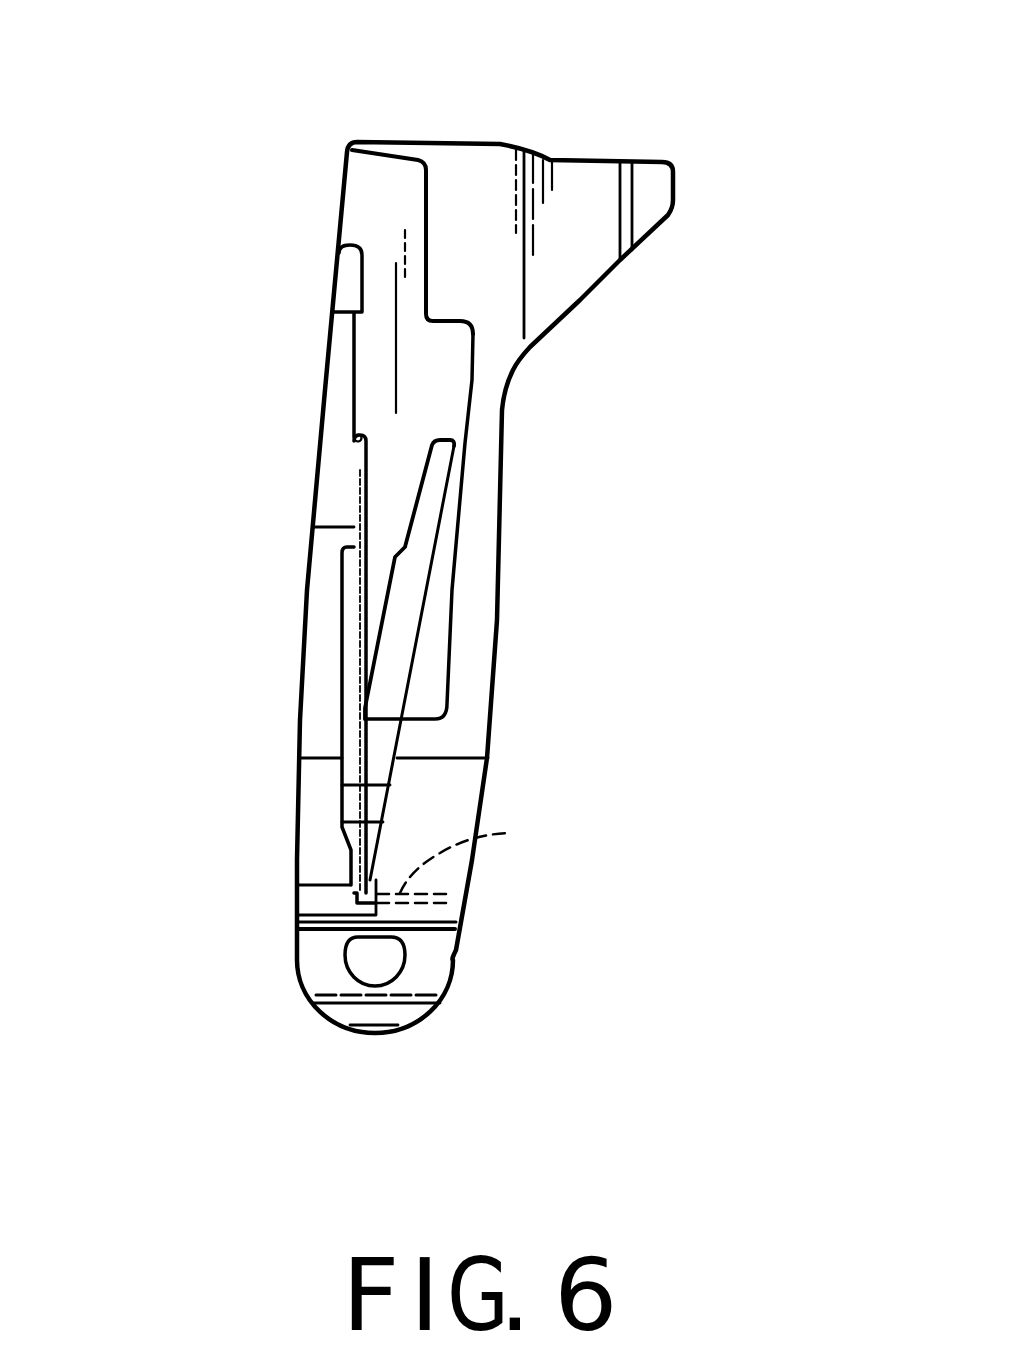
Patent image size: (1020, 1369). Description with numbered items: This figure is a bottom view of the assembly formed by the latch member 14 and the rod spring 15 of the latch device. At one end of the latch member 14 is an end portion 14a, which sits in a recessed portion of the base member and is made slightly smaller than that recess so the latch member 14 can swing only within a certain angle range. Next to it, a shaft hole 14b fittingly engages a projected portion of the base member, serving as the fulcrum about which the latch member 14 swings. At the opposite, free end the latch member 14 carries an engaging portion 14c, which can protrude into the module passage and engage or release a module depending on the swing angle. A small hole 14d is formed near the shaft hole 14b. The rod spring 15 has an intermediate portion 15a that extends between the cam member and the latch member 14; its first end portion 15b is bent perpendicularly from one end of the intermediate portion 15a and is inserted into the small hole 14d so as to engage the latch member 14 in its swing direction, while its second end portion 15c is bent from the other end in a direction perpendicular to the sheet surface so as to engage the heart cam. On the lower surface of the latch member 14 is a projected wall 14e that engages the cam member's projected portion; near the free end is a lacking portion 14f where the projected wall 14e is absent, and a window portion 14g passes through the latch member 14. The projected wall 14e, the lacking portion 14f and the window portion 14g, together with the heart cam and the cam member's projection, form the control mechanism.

The latch member 14 is at (577, 718).
The end portion 14a is at (572, 975).
The shaft hole 14b is at (389, 1088).
The engaging portion 14c is at (652, 187).
The small hole 14d is at (578, 878).
The projected wall 14e is at (347, 285).
The lacking portion 14f is at (367, 194).
The window portion 14g is at (578, 618).
The rod spring 15 is at (360, 613).
The intermediate portion 15a is at (360, 683).
The first end portion 15b is at (578, 817).
The second end portion 15c is at (350, 423).